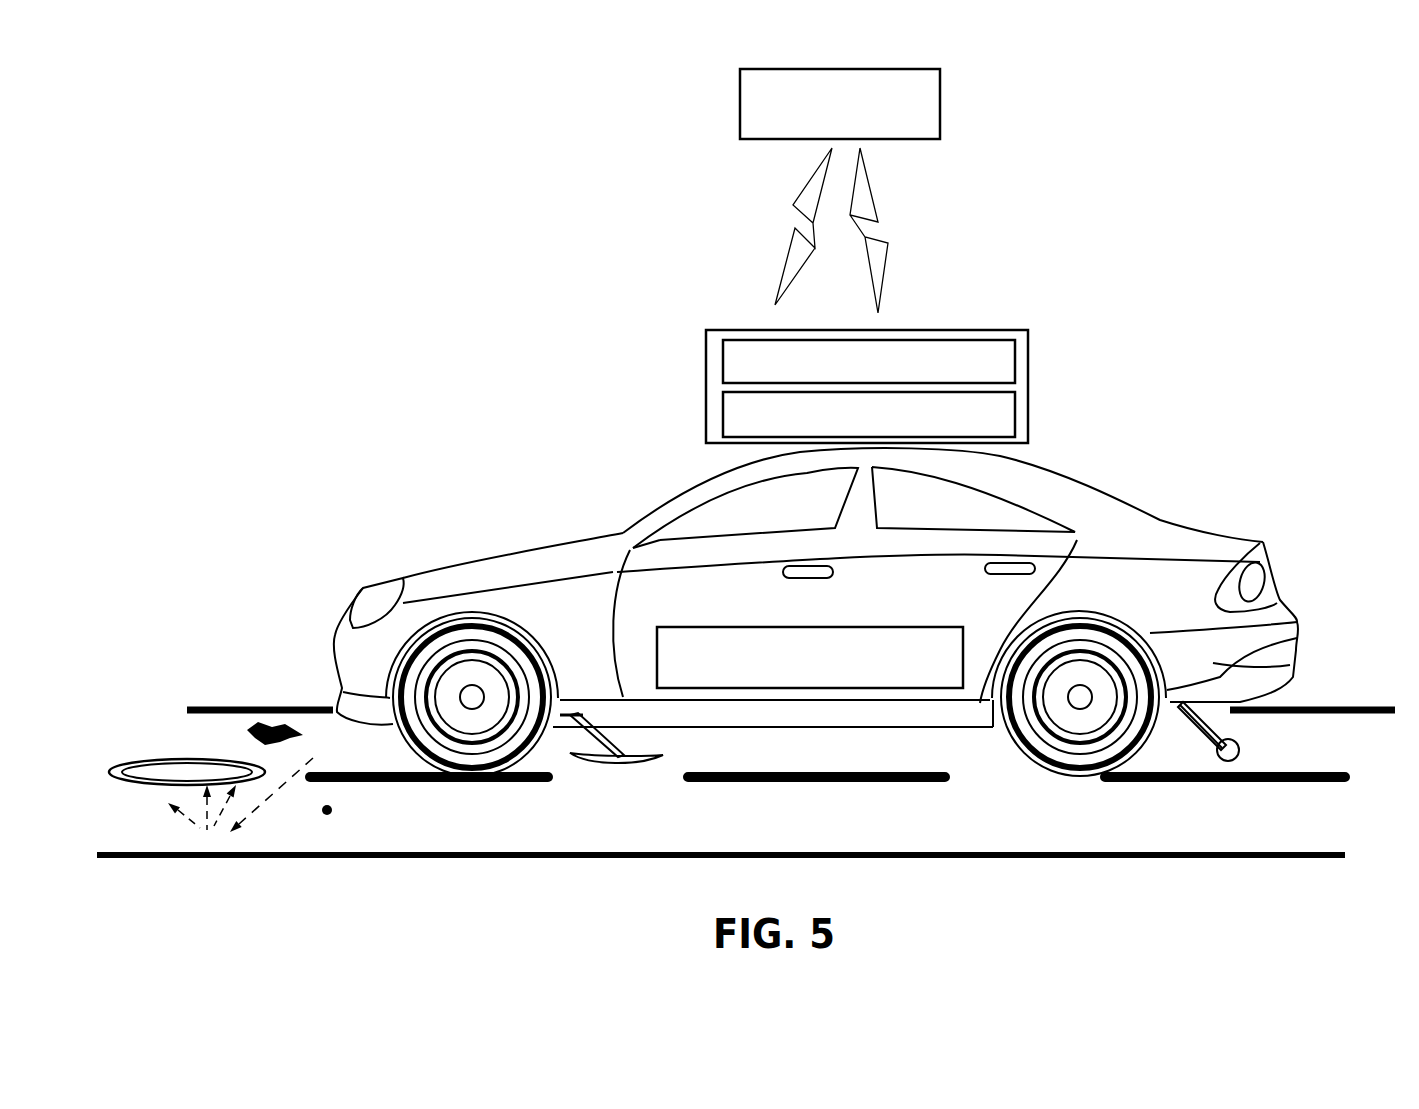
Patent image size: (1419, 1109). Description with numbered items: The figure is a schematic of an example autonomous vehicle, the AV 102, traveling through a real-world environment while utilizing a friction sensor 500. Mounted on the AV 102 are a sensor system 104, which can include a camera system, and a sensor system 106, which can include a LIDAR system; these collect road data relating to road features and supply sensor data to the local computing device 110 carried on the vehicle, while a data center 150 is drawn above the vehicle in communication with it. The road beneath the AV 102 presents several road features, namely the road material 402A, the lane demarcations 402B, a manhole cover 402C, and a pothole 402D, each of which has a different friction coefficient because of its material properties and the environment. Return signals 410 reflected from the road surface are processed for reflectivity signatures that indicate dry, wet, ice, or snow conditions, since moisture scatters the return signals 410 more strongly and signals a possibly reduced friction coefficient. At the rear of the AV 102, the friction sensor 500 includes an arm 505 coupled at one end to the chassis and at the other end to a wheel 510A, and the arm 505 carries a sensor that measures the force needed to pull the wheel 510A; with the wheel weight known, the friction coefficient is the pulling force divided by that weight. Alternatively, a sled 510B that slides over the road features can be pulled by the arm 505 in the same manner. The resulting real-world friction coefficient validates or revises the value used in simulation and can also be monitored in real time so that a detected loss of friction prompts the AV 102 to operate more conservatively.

The AV 102 is at (424, 484).
The sensor system 104 is at (869, 361).
The sensor system 106 is at (869, 414).
The local computing device 110 is at (810, 657).
The data center 150 is at (840, 104).
The road material 402A is at (327, 810).
The lane demarcations 402B is at (510, 794).
The manhole cover 402C is at (153, 746).
The pothole 402D is at (257, 704).
The return signals 410 is at (218, 795).
The friction sensor 500 is at (1226, 698).
The arm 505 is at (1226, 723).
The wheel 510A is at (1204, 761).
The sled 510B is at (638, 778).